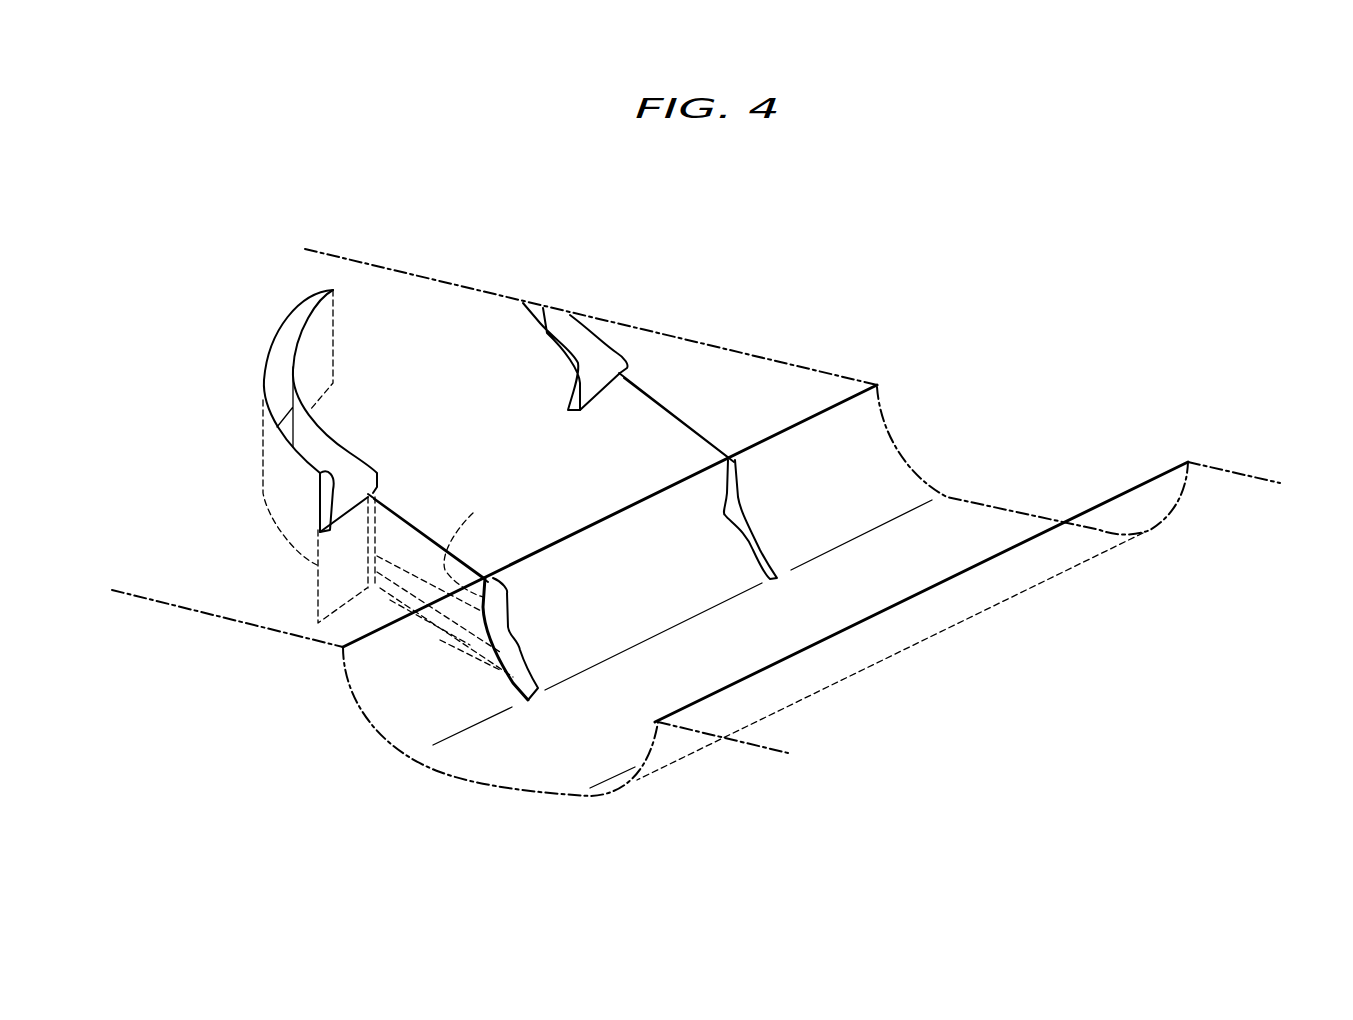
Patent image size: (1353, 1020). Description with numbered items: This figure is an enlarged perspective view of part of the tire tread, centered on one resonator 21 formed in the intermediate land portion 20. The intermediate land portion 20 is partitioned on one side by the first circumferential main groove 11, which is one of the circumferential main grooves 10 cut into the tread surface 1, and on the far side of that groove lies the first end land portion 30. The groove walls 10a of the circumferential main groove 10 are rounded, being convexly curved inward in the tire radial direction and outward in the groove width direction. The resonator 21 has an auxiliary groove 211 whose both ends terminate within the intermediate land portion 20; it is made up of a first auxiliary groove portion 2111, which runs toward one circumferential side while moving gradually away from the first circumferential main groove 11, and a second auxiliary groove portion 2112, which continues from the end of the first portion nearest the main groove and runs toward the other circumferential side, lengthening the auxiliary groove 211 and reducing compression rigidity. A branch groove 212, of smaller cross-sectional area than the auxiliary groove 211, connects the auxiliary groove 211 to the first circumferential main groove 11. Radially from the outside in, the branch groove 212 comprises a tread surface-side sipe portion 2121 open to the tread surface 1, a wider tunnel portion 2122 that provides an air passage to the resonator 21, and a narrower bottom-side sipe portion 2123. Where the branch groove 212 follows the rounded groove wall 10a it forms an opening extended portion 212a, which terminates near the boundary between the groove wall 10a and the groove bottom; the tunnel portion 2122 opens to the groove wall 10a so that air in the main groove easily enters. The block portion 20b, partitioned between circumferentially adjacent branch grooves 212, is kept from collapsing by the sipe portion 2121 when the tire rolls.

The tread surface 1 is at (765, 323).
The circumferential main groove 10 is at (820, 577).
The first circumferential main groove 11 is at (978, 457).
The groove wall 10a is at (867, 458).
The first end land portion 30 is at (1218, 490).
The intermediate land portion 20 is at (446, 310).
The block portion 20b is at (565, 493).
The resonator 21 is at (360, 413).
The auxiliary groove 211 is at (273, 427).
The first auxiliary groove portion 2111 is at (280, 367).
The second auxiliary groove portion 2112 is at (340, 515).
The branch groove 212 is at (408, 518).
The tread surface-side sipe portion 2121 is at (443, 567).
The tunnel portion 2122 is at (487, 630).
The bottom-side sipe portion 2123 is at (510, 678).
The opening extended portion 212a is at (514, 637).